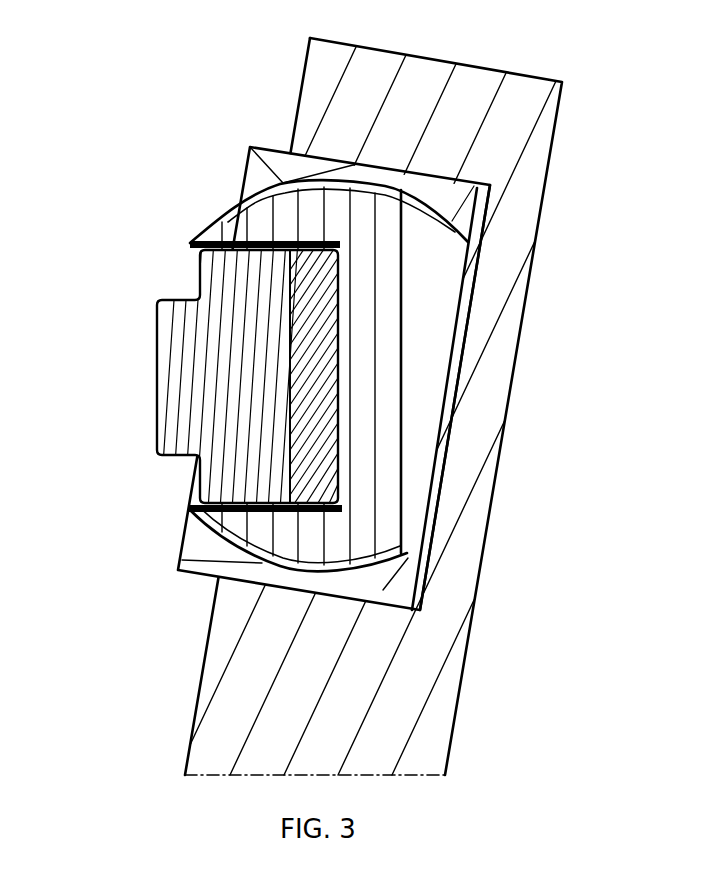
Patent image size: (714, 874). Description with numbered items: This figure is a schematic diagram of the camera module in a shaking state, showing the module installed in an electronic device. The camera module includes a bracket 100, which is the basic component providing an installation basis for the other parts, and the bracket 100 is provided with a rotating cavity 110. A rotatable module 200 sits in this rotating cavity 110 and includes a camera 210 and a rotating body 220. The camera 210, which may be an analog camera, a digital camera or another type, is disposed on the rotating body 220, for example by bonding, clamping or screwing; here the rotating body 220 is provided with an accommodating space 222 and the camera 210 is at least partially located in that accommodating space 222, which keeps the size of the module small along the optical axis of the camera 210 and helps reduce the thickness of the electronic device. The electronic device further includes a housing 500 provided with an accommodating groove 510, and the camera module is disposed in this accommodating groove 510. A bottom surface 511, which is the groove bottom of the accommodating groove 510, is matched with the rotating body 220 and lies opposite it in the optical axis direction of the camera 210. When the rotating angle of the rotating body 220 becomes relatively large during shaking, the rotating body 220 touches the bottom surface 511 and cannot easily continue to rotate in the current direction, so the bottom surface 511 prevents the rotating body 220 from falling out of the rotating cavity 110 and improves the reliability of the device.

The bracket 100 is at (450, 203).
The rotating cavity 110 is at (418, 275).
The rotatable module 200 is at (192, 378).
The camera 210 is at (223, 367).
The rotating body 220 is at (270, 226).
The accommodating space 222 is at (250, 517).
The housing 500 is at (403, 689).
The accommodating groove 510 is at (455, 422).
The bottom surface 511 is at (445, 477).